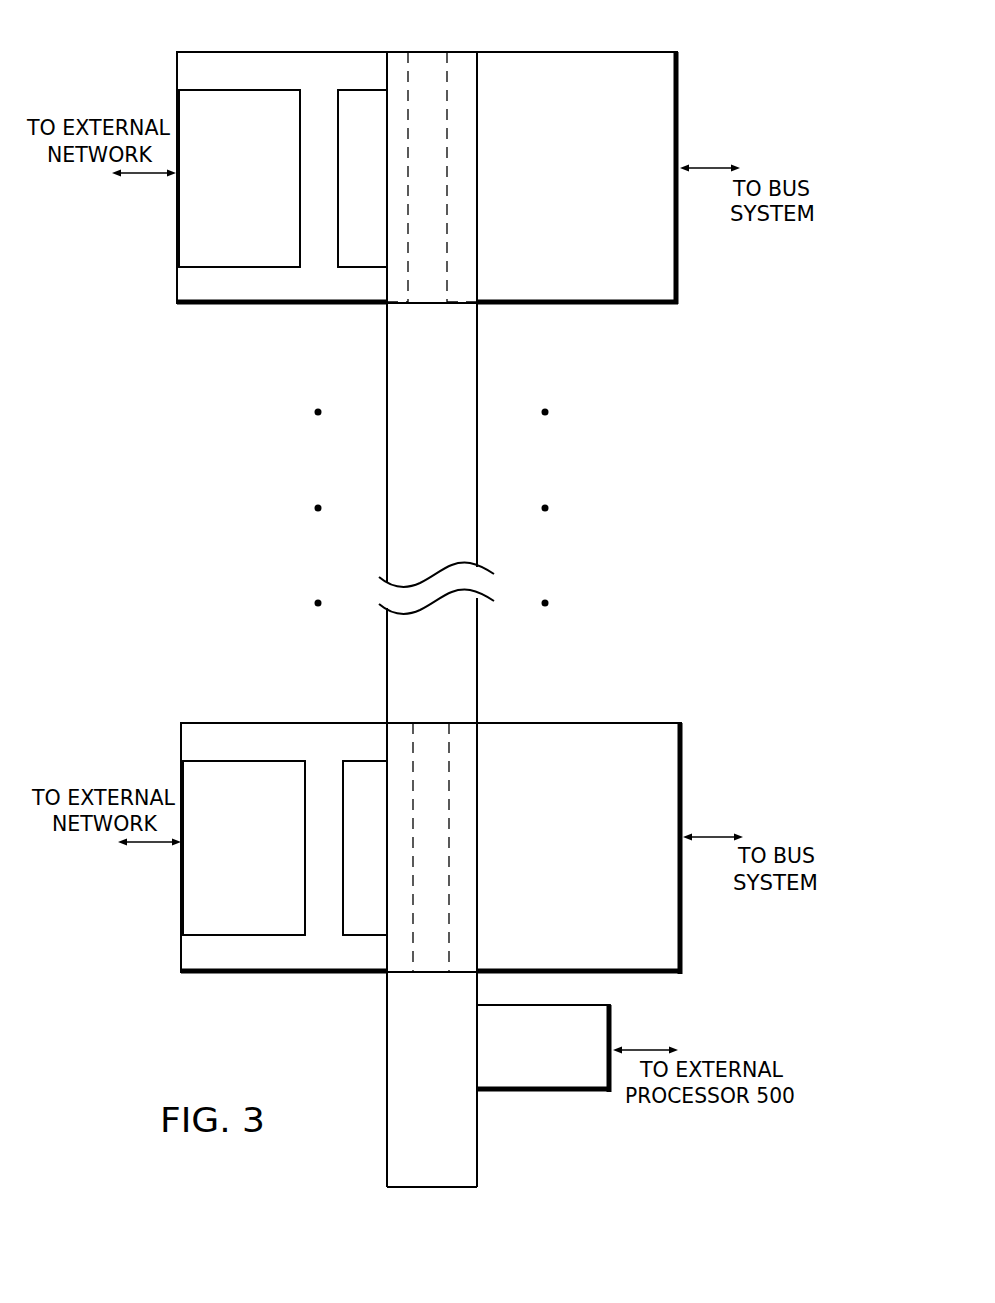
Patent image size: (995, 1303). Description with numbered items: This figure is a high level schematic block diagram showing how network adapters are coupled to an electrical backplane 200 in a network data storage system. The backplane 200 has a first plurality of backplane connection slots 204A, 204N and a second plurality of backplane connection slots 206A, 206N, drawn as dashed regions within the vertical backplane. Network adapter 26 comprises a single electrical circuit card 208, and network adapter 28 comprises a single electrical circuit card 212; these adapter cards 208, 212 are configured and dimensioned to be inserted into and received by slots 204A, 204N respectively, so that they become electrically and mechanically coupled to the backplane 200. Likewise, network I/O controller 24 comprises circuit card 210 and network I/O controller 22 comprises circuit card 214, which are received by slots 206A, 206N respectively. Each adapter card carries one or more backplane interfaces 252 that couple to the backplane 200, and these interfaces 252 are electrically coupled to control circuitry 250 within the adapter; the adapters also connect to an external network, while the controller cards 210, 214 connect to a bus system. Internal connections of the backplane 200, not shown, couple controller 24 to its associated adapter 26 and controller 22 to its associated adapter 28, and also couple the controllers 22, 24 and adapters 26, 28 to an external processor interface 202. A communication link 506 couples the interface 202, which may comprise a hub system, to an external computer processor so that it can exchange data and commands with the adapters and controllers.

The network I/O controller 22 is at (609, 847).
The network I/O controller 24 is at (599, 199).
The network adapter 26 is at (279, 46).
The network adapter 28 is at (284, 716).
The electrical backplane 200 is at (477, 655).
The external processor interface 202 is at (553, 1093).
The backplane connection slot 204A is at (406, 304).
The backplane connection slot 204N is at (408, 723).
The backplane connection slot 206A is at (451, 304).
The backplane connection slot 206N is at (458, 723).
The network I/O adapter card 208 is at (181, 52).
The network I/O controller card 210 is at (630, 305).
The network I/O adapter card 212 is at (323, 976).
The network I/O controller card 214 is at (683, 947).
The control circuitry 250 is at (232, 268).
The backplane interfaces 252 is at (349, 268).
The communication link 506 is at (656, 1047).